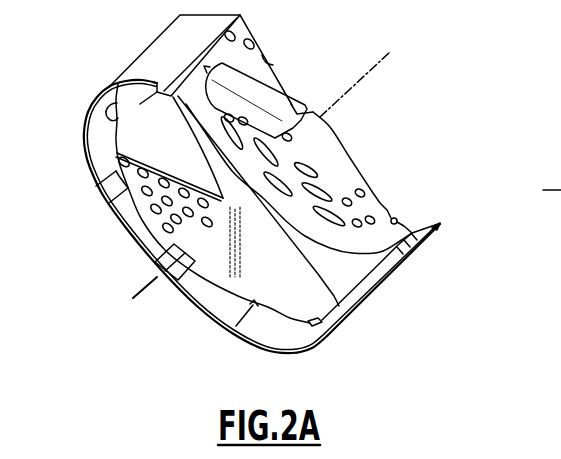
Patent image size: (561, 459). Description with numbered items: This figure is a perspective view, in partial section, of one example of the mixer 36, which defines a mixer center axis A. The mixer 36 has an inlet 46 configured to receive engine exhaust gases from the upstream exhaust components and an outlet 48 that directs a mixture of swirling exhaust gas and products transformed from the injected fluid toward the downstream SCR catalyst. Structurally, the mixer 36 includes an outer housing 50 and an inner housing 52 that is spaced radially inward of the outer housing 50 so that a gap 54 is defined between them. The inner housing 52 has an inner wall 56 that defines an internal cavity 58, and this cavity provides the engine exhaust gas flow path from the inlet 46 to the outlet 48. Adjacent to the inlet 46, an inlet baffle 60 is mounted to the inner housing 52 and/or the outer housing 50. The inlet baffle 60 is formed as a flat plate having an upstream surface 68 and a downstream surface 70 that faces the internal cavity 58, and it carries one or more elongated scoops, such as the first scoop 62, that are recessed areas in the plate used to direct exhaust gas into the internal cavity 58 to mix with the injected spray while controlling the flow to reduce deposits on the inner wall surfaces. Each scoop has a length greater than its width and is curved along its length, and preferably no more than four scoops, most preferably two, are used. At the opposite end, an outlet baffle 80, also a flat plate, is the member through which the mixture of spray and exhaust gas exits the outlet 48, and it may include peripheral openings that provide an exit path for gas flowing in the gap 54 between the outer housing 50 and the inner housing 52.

The mixer 36 is at (278, 184).
The inlet 46 is at (440, 224).
The outlet 48 is at (97, 175).
The outer housing 50 is at (380, 288).
The inner housing 52 is at (403, 263).
The gap 54 is at (360, 298).
The inner wall 56 is at (112, 108).
The internal cavity 58 is at (153, 135).
The inlet baffle 60 is at (287, 64).
The first scoop 62 is at (299, 113).
The upstream surface 68 is at (252, 34).
The downstream surface 70 is at (396, 217).
The outlet baffle 80 is at (233, 290).
The mixer center axis A is at (143, 280).